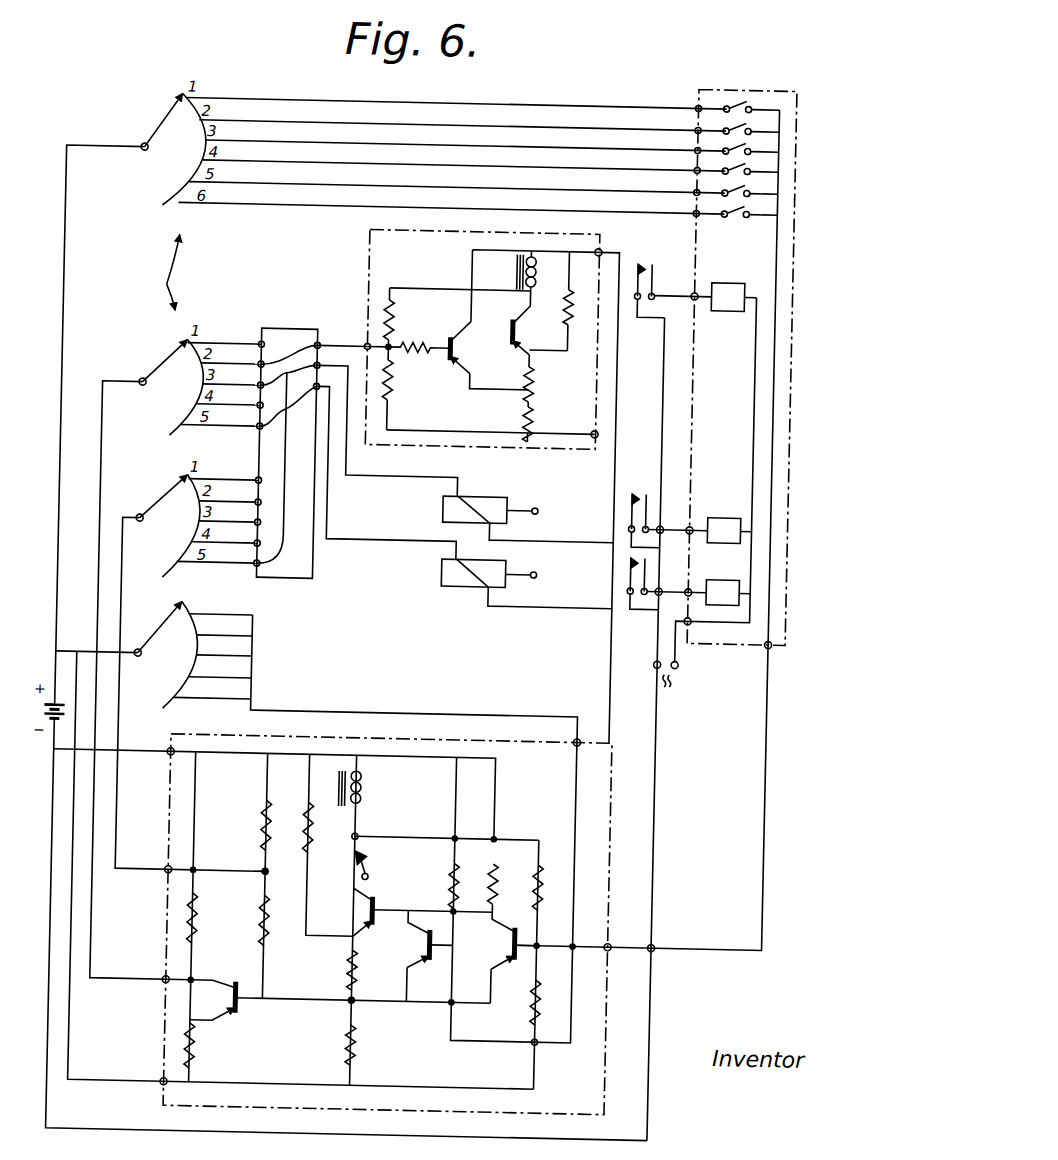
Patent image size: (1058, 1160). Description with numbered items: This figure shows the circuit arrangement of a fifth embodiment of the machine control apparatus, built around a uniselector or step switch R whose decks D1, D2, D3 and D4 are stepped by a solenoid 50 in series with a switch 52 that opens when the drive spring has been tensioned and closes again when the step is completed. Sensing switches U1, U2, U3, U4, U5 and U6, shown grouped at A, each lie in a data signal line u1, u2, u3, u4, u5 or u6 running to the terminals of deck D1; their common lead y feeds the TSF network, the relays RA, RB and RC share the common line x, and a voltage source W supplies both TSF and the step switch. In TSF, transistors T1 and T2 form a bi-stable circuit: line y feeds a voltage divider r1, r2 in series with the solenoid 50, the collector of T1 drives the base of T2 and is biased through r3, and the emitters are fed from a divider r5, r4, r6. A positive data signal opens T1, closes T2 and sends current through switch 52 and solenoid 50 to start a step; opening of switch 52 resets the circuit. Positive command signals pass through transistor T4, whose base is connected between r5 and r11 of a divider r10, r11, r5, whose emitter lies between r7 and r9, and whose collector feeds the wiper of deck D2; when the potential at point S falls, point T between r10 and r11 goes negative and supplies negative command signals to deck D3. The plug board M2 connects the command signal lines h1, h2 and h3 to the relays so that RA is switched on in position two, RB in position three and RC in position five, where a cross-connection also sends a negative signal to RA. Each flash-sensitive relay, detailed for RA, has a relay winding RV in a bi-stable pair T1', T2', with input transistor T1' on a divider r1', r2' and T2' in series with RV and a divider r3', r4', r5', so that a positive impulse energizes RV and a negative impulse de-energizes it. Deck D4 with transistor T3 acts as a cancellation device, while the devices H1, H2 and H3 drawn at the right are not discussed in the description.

The deck D1 is at (130, 145).
The deck D2 is at (132, 379).
The deck D3 is at (133, 515).
The deck D4 is at (137, 650).
The progressive switch arrangement R is at (161, 272).
The voltage source W is at (46, 723).
The data signal line u1 is at (456, 95).
The data signal line u2 is at (462, 117).
The data signal line u3 is at (466, 137).
The data signal line u4 is at (463, 157).
The data signal line u5 is at (457, 180).
The data signal line u6 is at (451, 200).
The switch unit A is at (756, 86).
The sensing switch U1 is at (738, 103).
The sensing switch U2 is at (737, 125).
The sensing switch U3 is at (737, 145).
The sensing switch U4 is at (736, 165).
The sensing switch U5 is at (736, 187).
The sensing switch U6 is at (735, 208).
The relay winding 1 H1 is at (695, 288).
The relay winding 2 H2 is at (690, 519).
The relay winding 3 H3 is at (689, 582).
The plug board M2 is at (287, 334).
The command signal line h1 is at (327, 346).
The command signal line h2 is at (348, 367).
The command signal line h3 is at (325, 505).
The command signal control relay RA is at (408, 274).
The relay winding RV is at (530, 261).
The resistor r1' is at (402, 318).
The resistor r2' is at (401, 389).
The resistor r3' is at (579, 302).
The resistor r4' is at (541, 387).
The resistor r5' is at (540, 425).
The input transistor T1' is at (459, 355).
The transistor T2' is at (540, 329).
The command signal control relay RB is at (470, 498).
The command signal control relay RC is at (455, 588).
The network TSF is at (512, 738).
The solenoid 50 is at (367, 780).
The switch 52 is at (373, 860).
The point T is at (275, 876).
The transistor T1 is at (504, 954).
The transistor T2 is at (354, 912).
The transistor T3 is at (429, 948).
The transistor T4 is at (249, 1010).
The resistor r1 is at (547, 888).
The resistor r2 is at (545, 1003).
The resistor r3 is at (501, 884).
The resistor r4 is at (340, 970).
The resistor r5 is at (337, 1045).
The resistor r6 is at (317, 831).
The resistor r7 is at (203, 926).
The resistor r9 is at (206, 1058).
The resistor r10 is at (268, 828).
The resistor r11 is at (274, 924).
The common line x is at (660, 831).
The common lead y is at (769, 837).